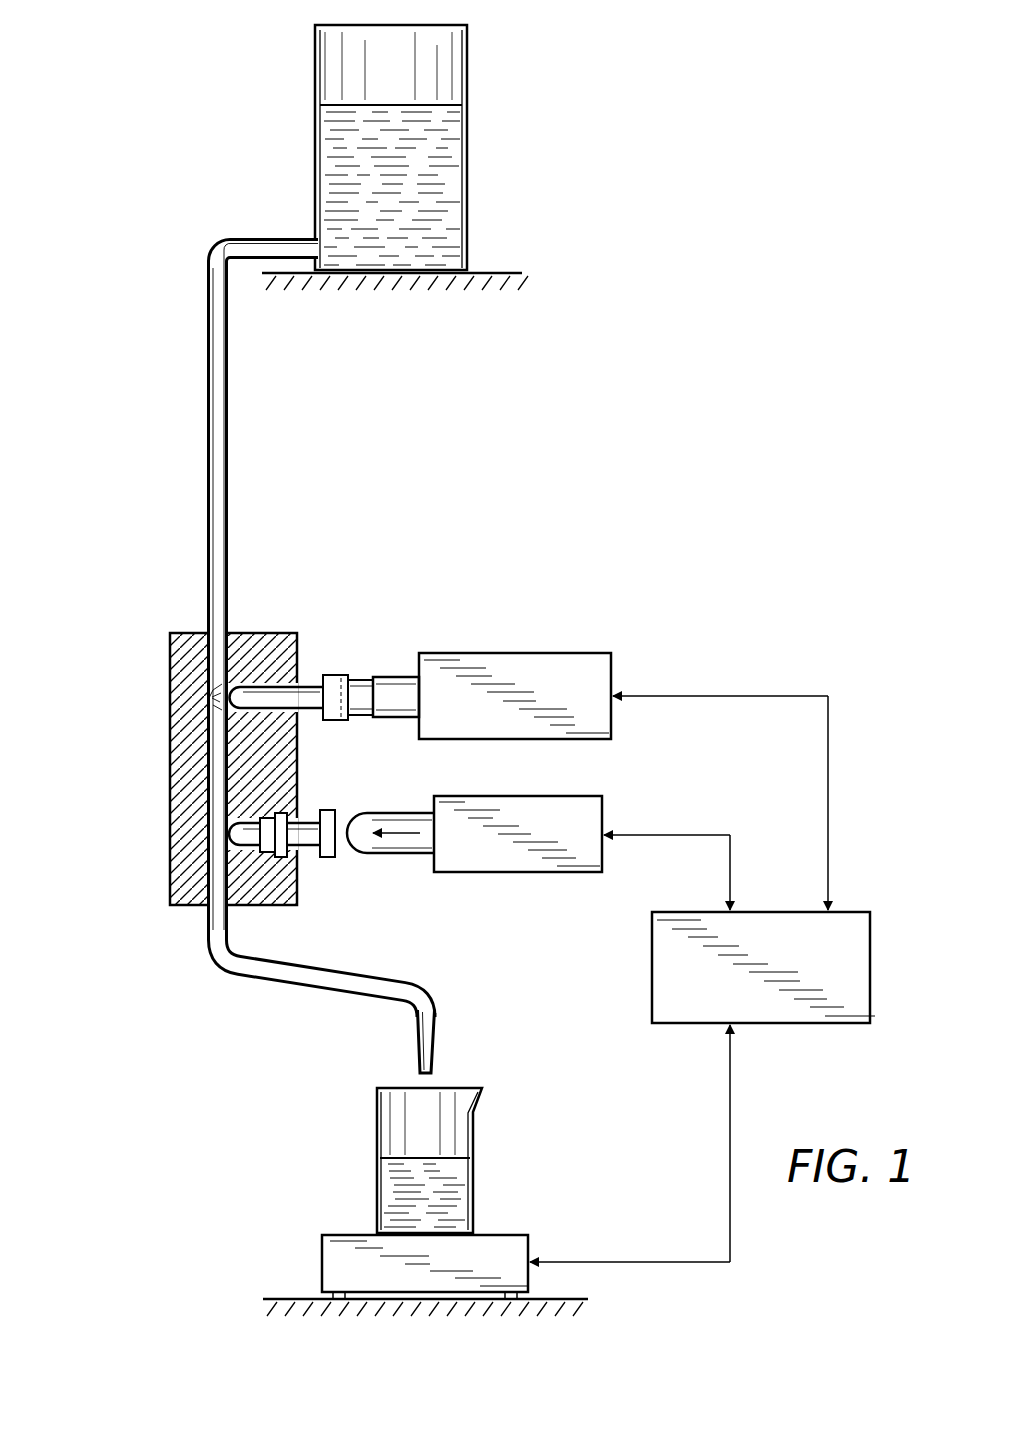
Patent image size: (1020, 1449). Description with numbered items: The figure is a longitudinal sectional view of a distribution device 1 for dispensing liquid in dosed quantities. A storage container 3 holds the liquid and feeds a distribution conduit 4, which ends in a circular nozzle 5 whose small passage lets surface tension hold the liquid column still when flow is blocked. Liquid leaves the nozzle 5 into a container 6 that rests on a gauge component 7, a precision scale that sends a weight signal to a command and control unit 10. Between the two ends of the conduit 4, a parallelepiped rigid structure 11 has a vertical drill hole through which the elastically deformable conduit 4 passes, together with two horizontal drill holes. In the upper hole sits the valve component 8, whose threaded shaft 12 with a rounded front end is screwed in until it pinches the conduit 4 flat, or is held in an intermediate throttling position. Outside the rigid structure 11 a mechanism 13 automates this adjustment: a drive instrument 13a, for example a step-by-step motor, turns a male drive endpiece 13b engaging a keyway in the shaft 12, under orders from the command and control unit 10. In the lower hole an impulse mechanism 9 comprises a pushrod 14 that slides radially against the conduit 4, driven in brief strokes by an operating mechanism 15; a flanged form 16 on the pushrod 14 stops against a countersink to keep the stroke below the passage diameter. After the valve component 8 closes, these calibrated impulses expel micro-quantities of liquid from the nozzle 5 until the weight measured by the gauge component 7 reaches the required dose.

The distribution device 1 is at (319, 630).
The storage container 3 is at (468, 196).
The distribution conduit 4 is at (232, 503).
The nozzle 5 is at (418, 1078).
The container 6 is at (378, 1148).
The gauge component 7 is at (514, 1243).
The valve component 8 is at (278, 678).
The impulse mechanism 9 is at (350, 862).
The command and control unit 10 is at (658, 1000).
The rigid structure 11 is at (170, 665).
The shaft 12 is at (335, 722).
The mechanism for automated activation 13 is at (513, 667).
The drive instrument 13a is at (598, 660).
The male drive endpiece 13b is at (360, 678).
The pushrod 14 is at (328, 810).
The operating mechanism 15 is at (585, 800).
The flanged form 16 is at (287, 862).